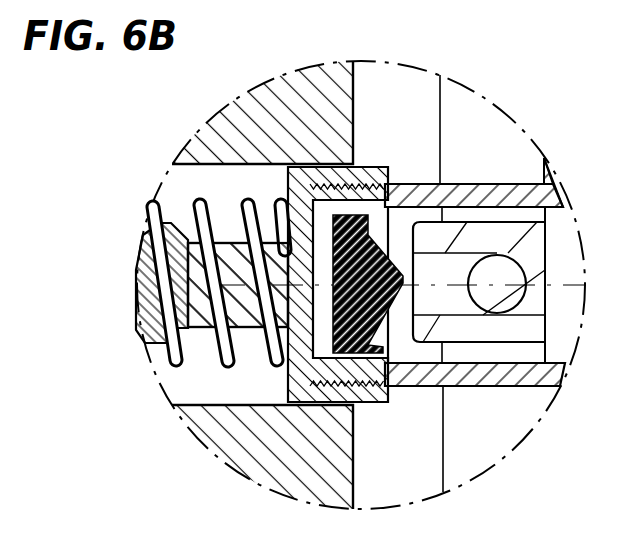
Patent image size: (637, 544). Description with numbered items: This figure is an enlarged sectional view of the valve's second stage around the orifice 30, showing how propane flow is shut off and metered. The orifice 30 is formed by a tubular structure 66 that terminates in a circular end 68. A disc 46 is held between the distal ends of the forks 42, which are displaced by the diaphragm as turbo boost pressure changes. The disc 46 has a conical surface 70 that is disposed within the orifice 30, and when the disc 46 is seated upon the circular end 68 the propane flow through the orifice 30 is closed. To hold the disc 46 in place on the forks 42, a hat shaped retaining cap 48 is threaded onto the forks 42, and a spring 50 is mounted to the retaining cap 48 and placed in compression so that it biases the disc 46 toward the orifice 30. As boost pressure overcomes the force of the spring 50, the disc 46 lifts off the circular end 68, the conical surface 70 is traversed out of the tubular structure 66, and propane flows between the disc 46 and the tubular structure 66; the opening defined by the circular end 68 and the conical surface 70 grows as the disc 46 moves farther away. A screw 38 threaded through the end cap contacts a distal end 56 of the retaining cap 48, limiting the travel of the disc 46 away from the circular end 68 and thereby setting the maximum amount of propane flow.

The orifice 30 is at (432, 268).
The screw 38 is at (143, 341).
The forks 42 is at (500, 190).
The disc 46 is at (333, 247).
The hat shaped retaining cap 48 is at (278, 185).
The spring 50 is at (192, 196).
The distal end 56 is at (165, 270).
The tubular structure 66 is at (448, 233).
The circular end 68 is at (445, 390).
The conical surface 70 is at (403, 290).